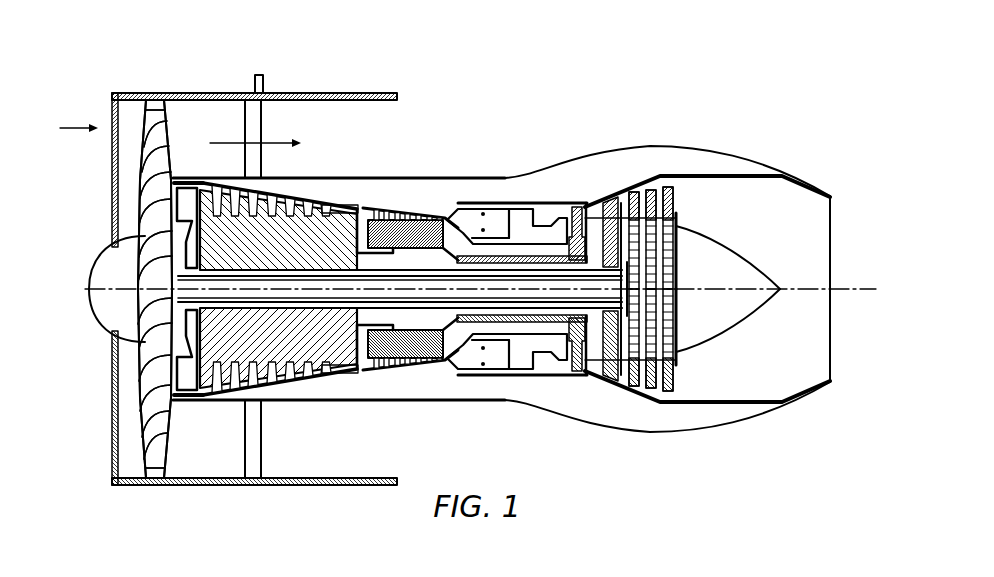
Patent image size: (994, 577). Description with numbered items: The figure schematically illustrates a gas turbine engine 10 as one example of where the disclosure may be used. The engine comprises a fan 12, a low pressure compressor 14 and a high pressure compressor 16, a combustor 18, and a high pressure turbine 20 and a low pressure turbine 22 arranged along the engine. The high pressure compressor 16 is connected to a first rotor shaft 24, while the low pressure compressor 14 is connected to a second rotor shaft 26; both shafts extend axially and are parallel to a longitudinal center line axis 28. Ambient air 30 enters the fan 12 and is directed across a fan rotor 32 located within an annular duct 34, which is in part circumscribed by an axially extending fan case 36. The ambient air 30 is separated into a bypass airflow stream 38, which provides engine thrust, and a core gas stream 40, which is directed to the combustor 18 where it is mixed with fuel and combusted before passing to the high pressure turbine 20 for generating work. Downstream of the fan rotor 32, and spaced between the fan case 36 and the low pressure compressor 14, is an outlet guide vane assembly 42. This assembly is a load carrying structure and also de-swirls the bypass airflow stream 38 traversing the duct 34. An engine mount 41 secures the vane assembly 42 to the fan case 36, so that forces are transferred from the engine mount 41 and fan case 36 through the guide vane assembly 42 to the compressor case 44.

The gas turbine engine 10 is at (604, 46).
The fan 12 is at (128, 180).
The low pressure compressor 14 is at (284, 233).
The high pressure compressor 16 is at (407, 366).
The combustor 18 is at (497, 364).
The high pressure turbine 20 is at (576, 206).
The low pressure turbine 22 is at (673, 191).
The first rotor shaft 24 is at (517, 322).
The second rotor shaft 26 is at (590, 358).
The longitudinal center line axis 28 is at (864, 280).
The ambient air 30 is at (79, 127).
The fan rotor 32 is at (157, 460).
The annular duct 34 is at (248, 450).
The fan case 36 is at (203, 486).
The bypass airflow stream 38 is at (288, 138).
The core gas stream 40 is at (363, 218).
The engine mount 41 is at (253, 83).
The outlet guide vane assembly 42 is at (249, 120).
The compressor case 44 is at (272, 190).